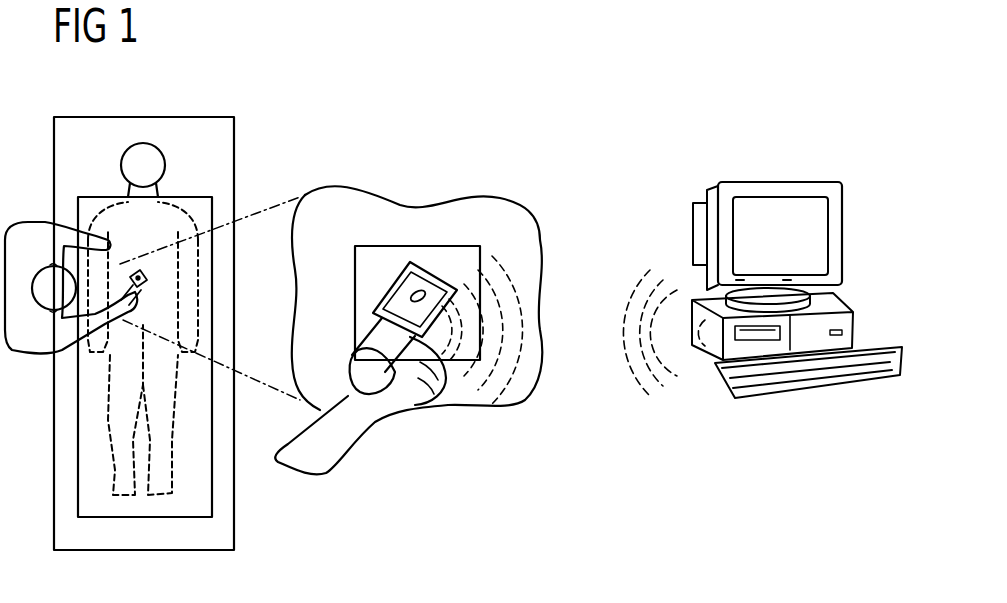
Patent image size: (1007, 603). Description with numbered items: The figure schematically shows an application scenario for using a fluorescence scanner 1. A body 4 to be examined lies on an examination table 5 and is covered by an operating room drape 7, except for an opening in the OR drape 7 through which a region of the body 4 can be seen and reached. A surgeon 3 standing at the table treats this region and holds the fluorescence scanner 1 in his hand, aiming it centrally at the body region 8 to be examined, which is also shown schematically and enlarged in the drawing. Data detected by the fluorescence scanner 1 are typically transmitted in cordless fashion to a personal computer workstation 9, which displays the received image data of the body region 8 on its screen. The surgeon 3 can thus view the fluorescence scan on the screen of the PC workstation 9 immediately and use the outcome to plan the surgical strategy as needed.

The fluorescence scanner 1 is at (147, 290).
The surgeon 3 is at (30, 233).
The body 4 is at (180, 218).
The examination table 5 is at (200, 138).
The OR drape 7 is at (188, 489).
The region to be examined 8 is at (457, 260).
The PC workstation 9 is at (777, 182).